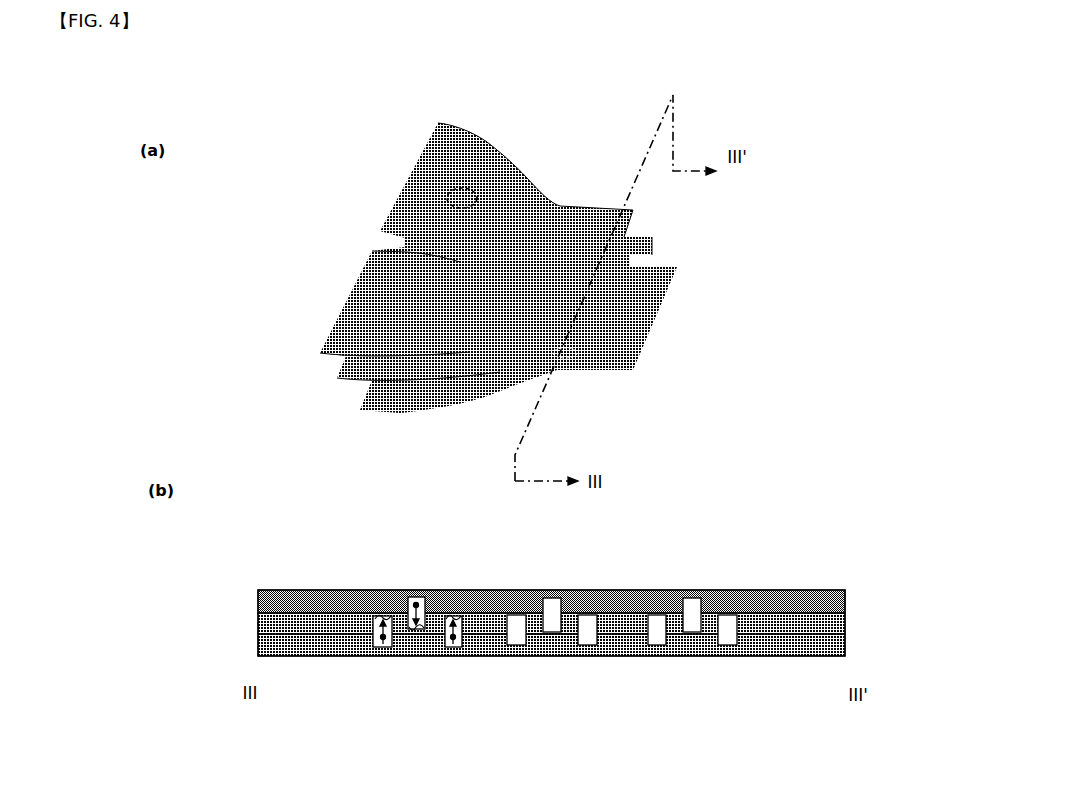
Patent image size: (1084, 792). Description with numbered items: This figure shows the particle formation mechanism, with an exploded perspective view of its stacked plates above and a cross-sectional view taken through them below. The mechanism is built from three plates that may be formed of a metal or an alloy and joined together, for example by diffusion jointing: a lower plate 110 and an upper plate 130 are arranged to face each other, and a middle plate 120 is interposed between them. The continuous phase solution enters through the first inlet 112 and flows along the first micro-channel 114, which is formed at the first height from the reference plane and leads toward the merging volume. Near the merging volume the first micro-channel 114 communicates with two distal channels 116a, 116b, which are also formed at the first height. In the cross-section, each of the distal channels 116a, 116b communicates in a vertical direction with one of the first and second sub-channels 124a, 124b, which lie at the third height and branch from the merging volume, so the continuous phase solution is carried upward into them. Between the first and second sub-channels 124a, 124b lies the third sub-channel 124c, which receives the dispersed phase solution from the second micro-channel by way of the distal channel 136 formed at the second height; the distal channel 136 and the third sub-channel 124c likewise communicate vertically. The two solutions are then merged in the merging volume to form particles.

The lower plate 110 is at (653, 288).
The first inlet 112 is at (448, 207).
The first micro-channel 114 is at (495, 207).
The distal channel 116a is at (382, 648).
The distal channel 116b is at (452, 648).
The middle plate 120 is at (650, 247).
The first sub-channel 124a is at (378, 613).
The second sub-channel 124b is at (455, 613).
The third sub-channel 124c is at (420, 632).
The upper plate 130 is at (625, 222).
The distal channel 136 is at (415, 597).